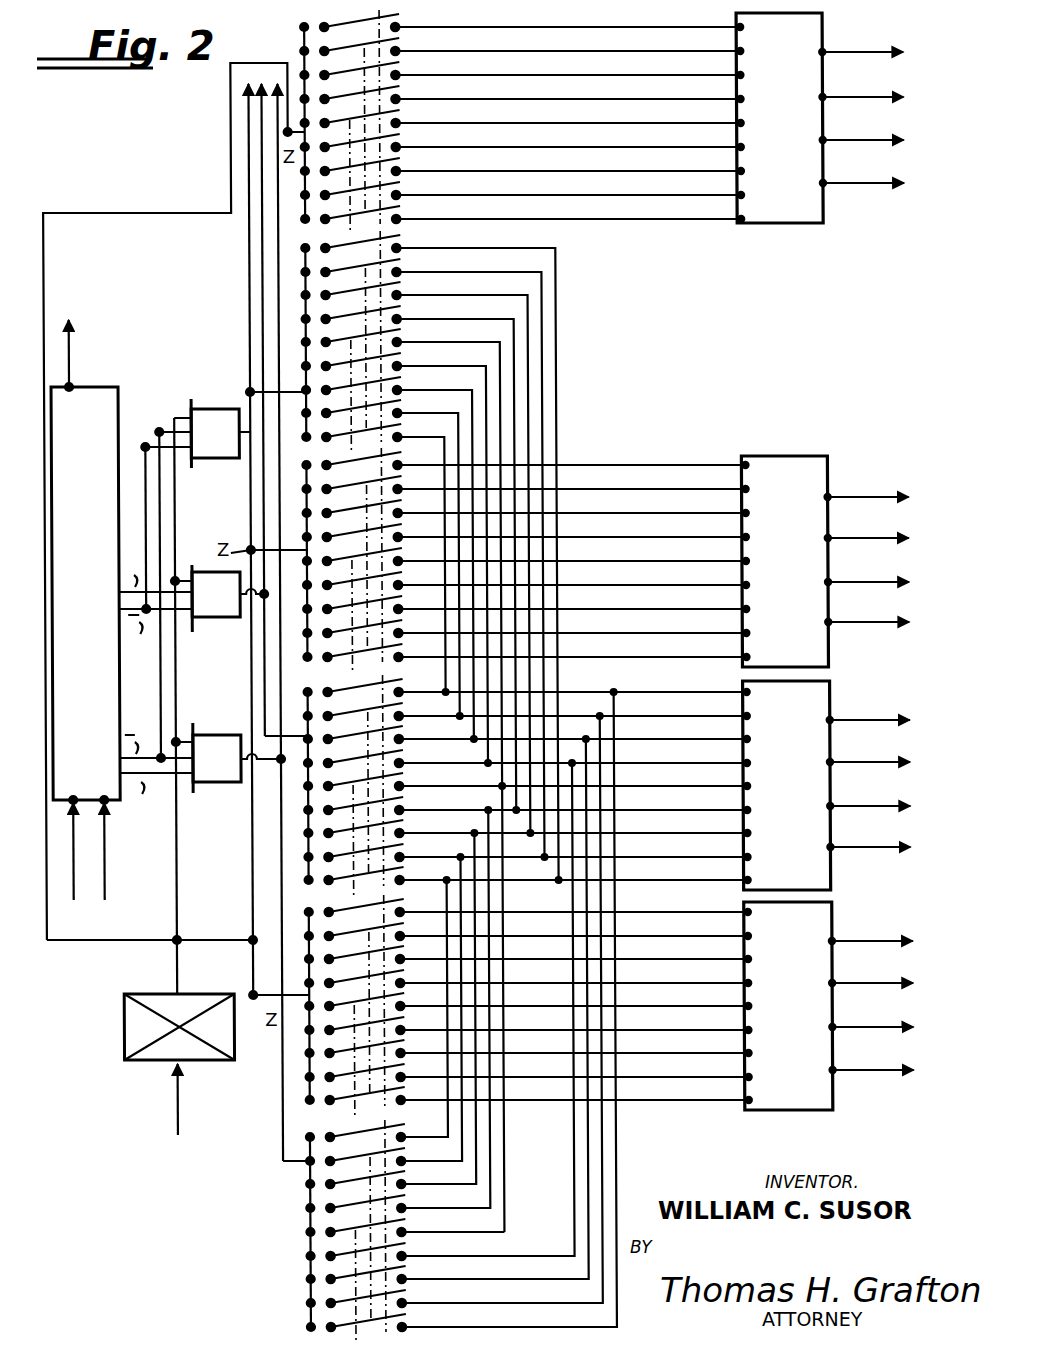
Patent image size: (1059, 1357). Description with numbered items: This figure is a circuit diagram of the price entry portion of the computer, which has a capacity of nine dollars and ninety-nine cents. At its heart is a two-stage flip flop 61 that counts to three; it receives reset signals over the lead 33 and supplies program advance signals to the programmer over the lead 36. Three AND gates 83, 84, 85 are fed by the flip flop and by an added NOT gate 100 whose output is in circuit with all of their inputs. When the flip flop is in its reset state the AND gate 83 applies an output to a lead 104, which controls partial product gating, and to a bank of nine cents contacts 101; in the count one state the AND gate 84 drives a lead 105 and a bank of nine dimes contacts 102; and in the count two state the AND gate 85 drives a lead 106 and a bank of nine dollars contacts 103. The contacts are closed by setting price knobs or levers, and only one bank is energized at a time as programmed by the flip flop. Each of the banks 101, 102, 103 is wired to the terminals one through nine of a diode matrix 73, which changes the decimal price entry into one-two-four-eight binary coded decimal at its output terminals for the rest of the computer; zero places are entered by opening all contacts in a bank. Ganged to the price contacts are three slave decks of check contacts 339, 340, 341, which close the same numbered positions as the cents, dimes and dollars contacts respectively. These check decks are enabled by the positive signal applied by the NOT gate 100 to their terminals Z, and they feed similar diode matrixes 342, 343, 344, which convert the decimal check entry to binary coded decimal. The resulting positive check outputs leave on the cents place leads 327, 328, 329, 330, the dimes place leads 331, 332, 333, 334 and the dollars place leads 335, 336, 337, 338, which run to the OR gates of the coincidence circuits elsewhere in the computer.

The lead 33 is at (101, 877).
The lead 36 is at (69, 370).
The two-stage flip flop 61 is at (110, 386).
The diode matrix 73 is at (828, 688).
The AND gate 83 is at (215, 408).
The AND gate 84 is at (214, 619).
The AND gate 85 is at (214, 784).
The NOT gate 100 is at (118, 1021).
The bank of cents contacts 101 is at (297, 406).
The bank of dimes contacts 102 is at (297, 850).
The bank of dollars contacts 103 is at (298, 1200).
The lead 104 is at (247, 270).
The lead 105 is at (260, 488).
The lead 106 is at (278, 1140).
The cents place lead 327 is at (860, 51).
The cents place lead 328 is at (860, 96).
The cents place lead 329 is at (866, 139).
The cents place lead 330 is at (864, 182).
The dimes place lead 331 is at (866, 496).
The dimes place lead 332 is at (866, 537).
The dimes place lead 333 is at (866, 581).
The dimes place lead 334 is at (866, 621).
The dollars place lead 335 is at (868, 940).
The dollars place lead 336 is at (868, 982).
The dollars place lead 337 is at (868, 1026).
The dollars place lead 338 is at (868, 1069).
The slave deck of check contacts 339 is at (297, 190).
The slave deck of check contacts 340 is at (297, 628).
The slave deck of check contacts 341 is at (297, 1072).
The diode matrix 342 is at (760, 224).
The diode matrix 343 is at (754, 455).
The diode matrix 344 is at (764, 1111).